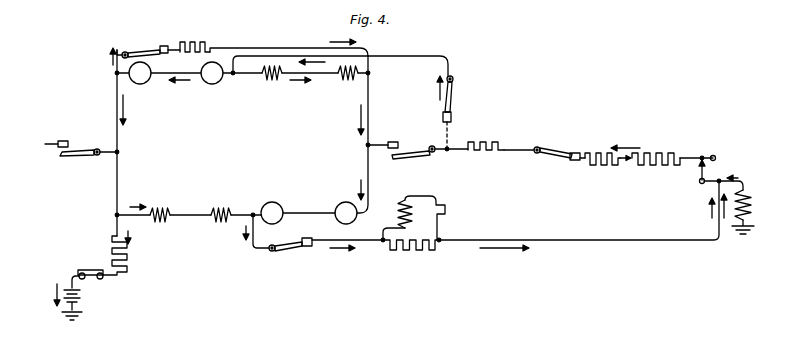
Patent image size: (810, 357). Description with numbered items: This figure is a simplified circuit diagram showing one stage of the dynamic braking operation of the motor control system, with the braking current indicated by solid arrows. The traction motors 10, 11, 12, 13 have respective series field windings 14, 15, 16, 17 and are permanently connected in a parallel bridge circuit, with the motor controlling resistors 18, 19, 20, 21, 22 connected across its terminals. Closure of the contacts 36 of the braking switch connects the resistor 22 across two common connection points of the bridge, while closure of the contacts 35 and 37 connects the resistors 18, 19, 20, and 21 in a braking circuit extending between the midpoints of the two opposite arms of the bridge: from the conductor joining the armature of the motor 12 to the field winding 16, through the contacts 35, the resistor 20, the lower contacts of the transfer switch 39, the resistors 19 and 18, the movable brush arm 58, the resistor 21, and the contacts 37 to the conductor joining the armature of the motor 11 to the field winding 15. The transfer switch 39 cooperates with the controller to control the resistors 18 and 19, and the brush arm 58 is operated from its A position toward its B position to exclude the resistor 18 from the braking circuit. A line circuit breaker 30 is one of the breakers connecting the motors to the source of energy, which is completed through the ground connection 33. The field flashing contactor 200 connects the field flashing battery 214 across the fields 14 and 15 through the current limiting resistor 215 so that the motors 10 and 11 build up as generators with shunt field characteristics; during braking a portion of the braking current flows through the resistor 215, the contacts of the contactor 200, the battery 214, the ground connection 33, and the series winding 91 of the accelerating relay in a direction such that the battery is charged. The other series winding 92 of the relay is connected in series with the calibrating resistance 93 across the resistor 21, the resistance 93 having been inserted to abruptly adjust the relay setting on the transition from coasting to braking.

The traction motor 10 is at (346, 213).
The traction motor 11 is at (272, 213).
The traction motor 12 is at (212, 73).
The traction motor 13 is at (140, 73).
The series field winding 14 is at (165, 207).
The series field winding 15 is at (226, 207).
The series field winding 16 is at (263, 78).
The series field winding 17 is at (339, 78).
The motor controlling resistor 18 is at (657, 152).
The motor controlling resistor 19 is at (598, 152).
The motor controlling resistor 20 is at (487, 143).
The motor controlling resistor 21 is at (412, 251).
The motor controlling resistor 22 is at (194, 42).
The line circuit breaker 30 is at (80, 158).
The ground connection 33 is at (80, 316).
The main contacts of braking switch 35 is at (453, 92).
The main contacts of braking switch 36 is at (141, 49).
The main contacts of braking switch 37 is at (289, 254).
The transfer switch 39 is at (556, 149).
The movable brush arm 58 is at (704, 174).
The series winding 91 is at (752, 205).
The series winding 92 is at (398, 210).
The calibrating resistance 93 is at (445, 208).
The field flashing contactor 200 is at (90, 270).
The field flashing battery 214 is at (84, 300).
The current limiting resistor 215 is at (129, 250).